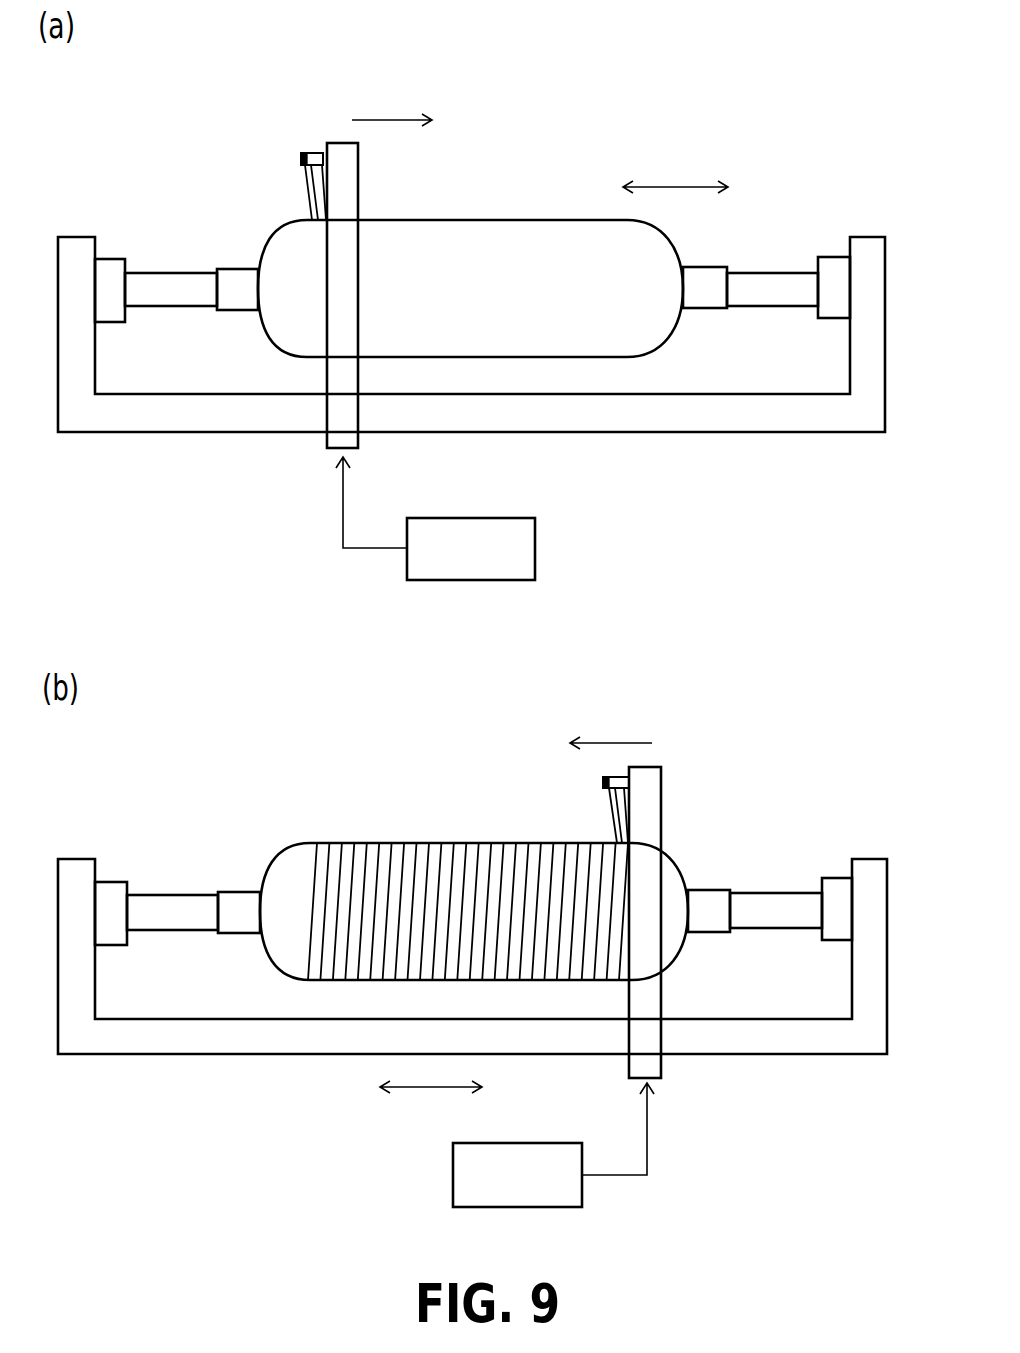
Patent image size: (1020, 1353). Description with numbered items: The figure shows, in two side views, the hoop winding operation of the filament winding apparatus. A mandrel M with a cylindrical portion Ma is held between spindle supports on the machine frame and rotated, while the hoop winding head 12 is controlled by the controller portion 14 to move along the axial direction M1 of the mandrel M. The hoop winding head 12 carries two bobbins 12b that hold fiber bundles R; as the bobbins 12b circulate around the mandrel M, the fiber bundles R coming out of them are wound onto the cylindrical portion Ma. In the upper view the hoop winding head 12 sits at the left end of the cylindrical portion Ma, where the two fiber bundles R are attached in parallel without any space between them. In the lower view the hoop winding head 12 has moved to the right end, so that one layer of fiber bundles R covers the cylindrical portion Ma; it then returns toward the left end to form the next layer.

The hoop winding head 12 is at (338, 152).
The bobbins 12b is at (312, 154).
The controller portion 14 is at (535, 548).
The fiber bundles R is at (316, 200).
The mandrel M is at (626, 339).
The cylindrical portion Ma is at (507, 220).
The axial direction M1 is at (688, 183).